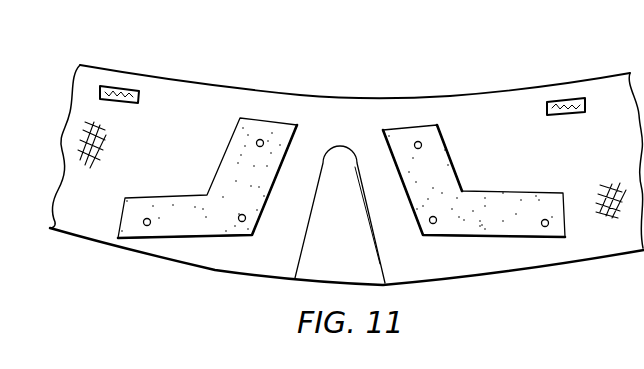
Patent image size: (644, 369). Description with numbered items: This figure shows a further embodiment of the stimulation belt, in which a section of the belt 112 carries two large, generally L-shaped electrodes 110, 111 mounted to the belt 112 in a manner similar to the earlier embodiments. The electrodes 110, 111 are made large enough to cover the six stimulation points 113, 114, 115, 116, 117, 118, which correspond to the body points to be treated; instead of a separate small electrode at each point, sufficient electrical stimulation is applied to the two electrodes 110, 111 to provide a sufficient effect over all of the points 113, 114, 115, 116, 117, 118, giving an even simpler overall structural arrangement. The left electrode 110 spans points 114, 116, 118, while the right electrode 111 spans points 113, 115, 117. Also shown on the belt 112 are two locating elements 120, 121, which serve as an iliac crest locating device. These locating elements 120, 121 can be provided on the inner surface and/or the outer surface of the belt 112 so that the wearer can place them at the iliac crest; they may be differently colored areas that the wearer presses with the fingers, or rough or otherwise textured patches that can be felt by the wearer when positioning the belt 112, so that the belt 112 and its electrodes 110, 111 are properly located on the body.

The L-shaped electrode 110 is at (257, 120).
The L-shaped electrode 111 is at (393, 130).
The belt 112 is at (188, 82).
The stimulation point 113 is at (422, 143).
The stimulation point 114 is at (256, 143).
The stimulation point 115 is at (436, 217).
The stimulation point 116 is at (242, 222).
The stimulation point 117 is at (548, 220).
The stimulation point 118 is at (148, 218).
The locating element 120 is at (590, 70).
The locating element 121 is at (117, 85).